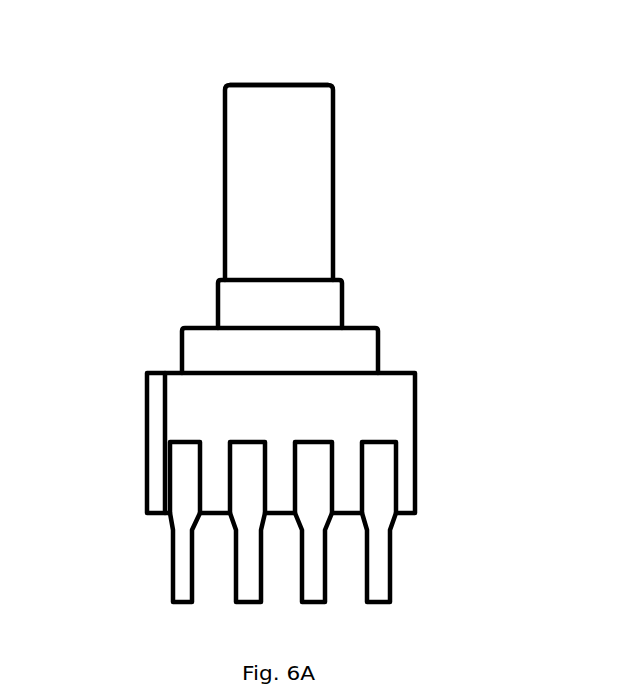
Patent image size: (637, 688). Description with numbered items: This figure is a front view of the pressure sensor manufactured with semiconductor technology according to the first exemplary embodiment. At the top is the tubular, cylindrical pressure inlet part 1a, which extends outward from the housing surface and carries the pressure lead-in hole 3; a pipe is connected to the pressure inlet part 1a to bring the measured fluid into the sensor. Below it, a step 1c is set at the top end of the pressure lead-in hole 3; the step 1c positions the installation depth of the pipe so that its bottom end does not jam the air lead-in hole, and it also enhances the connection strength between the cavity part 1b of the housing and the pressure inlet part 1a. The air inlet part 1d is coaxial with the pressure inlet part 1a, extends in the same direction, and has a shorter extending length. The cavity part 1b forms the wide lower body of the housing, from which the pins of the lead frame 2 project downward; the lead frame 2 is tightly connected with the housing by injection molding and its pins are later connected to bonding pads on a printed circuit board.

The pressure inlet part 1a is at (290, 175).
The cavity part 1b is at (403, 460).
The step 1c is at (340, 278).
The air inlet part 1d is at (363, 357).
The lead frame 2 is at (180, 575).
The pressure lead-in hole 3 is at (282, 86).